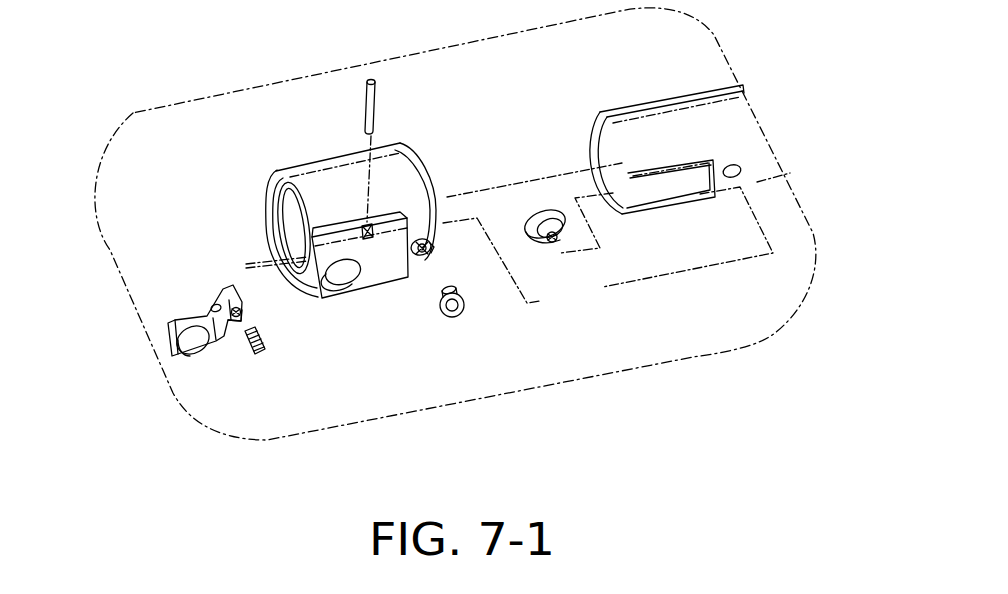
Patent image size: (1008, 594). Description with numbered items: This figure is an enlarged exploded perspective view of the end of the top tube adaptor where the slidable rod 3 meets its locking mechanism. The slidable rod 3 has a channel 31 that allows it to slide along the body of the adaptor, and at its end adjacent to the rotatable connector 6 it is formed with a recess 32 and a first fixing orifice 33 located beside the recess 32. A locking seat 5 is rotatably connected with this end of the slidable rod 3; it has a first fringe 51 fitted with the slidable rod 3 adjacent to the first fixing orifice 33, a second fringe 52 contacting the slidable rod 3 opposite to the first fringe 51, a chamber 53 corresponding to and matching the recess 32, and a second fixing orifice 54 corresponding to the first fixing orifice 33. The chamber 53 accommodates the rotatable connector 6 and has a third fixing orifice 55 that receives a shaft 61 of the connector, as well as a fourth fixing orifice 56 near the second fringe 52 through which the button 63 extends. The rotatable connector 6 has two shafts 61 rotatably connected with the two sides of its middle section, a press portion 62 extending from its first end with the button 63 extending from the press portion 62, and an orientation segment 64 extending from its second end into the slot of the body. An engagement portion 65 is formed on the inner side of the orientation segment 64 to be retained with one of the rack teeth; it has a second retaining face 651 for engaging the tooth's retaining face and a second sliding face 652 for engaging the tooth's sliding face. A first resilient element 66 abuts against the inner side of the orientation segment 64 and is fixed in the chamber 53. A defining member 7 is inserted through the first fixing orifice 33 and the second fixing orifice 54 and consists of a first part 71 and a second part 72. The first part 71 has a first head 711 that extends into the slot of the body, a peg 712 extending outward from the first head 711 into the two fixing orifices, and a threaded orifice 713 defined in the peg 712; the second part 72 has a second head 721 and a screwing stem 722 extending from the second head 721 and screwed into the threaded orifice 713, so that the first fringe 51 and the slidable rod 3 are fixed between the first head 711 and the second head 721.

The locking seat 5 is at (372, 245).
The first fringe 51 is at (401, 144).
The second fringe 52 is at (292, 201).
The chamber 53 is at (383, 280).
The second fixing orifice 54 is at (431, 250).
The third fixing orifice 55 is at (366, 228).
The fourth fixing orifice 56 is at (340, 288).
The shaft 61 is at (378, 106).
The rotatable connector 6 is at (182, 295).
The press portion 62 is at (174, 316).
The button 63 is at (187, 350).
The orientation segment 64 is at (242, 302).
The engagement portion 65 is at (181, 239).
The second retaining face 651 is at (222, 300).
The second sliding face 652 is at (236, 305).
The first resilient element 66 is at (242, 377).
The slidable rod 3 is at (710, 144).
The channel 31 is at (608, 140).
The recess 32 is at (703, 184).
The first fixing orifice 33 is at (737, 176).
The defining member 7 is at (510, 300).
The first part 71 is at (544, 276).
The first head 711 is at (553, 209).
The peg 712 is at (524, 230).
The threaded orifice 713 is at (553, 244).
The second part 72 is at (465, 366).
The second head 721 is at (455, 318).
The screwing stem 722 is at (441, 288).